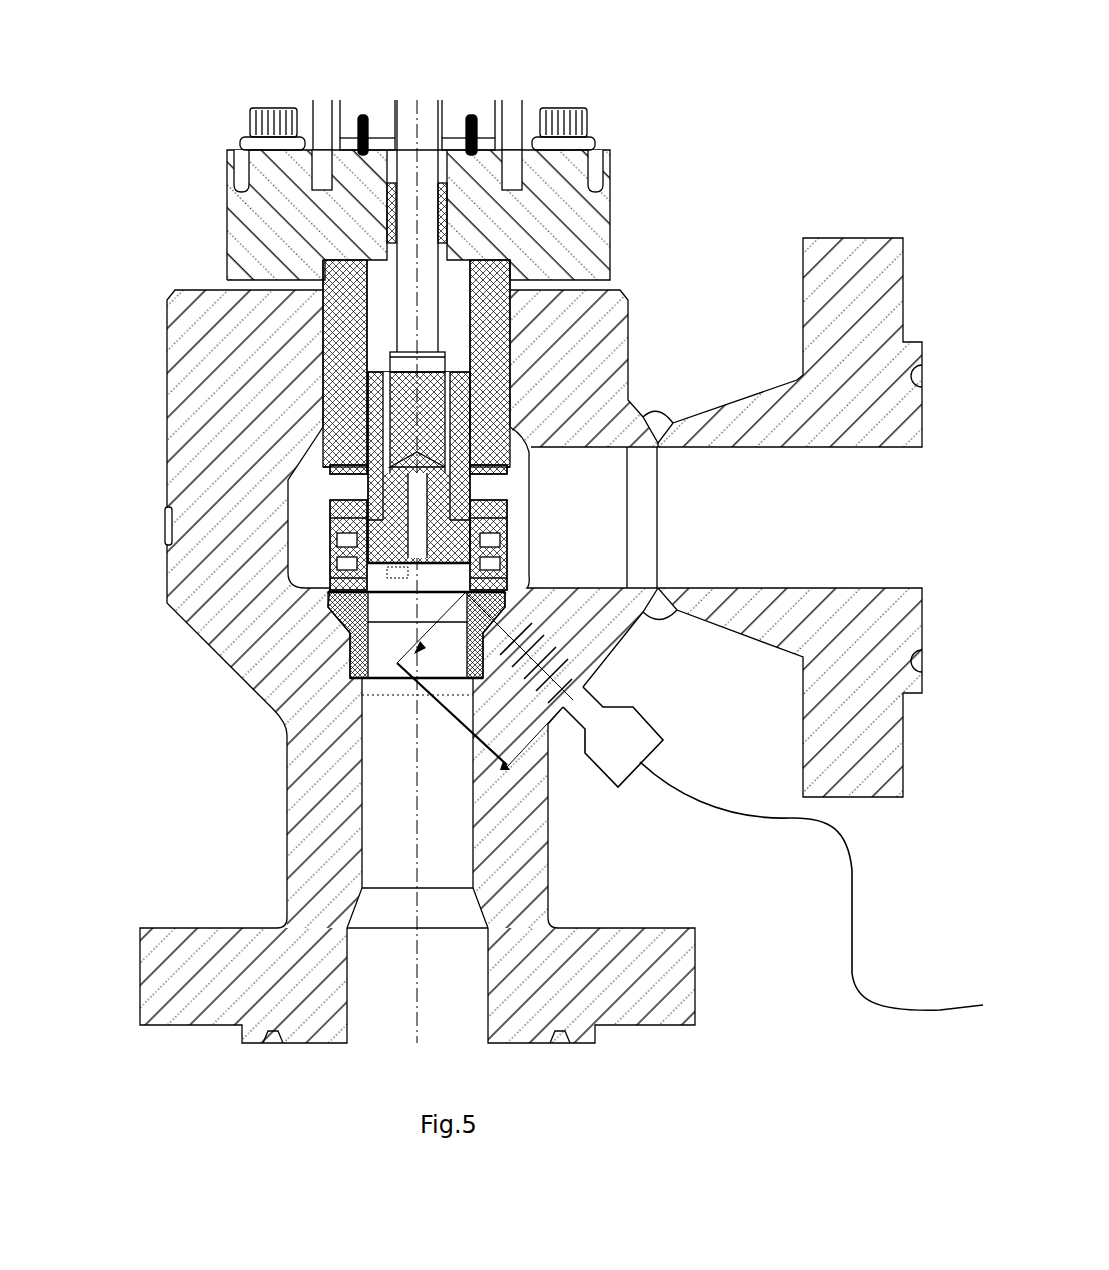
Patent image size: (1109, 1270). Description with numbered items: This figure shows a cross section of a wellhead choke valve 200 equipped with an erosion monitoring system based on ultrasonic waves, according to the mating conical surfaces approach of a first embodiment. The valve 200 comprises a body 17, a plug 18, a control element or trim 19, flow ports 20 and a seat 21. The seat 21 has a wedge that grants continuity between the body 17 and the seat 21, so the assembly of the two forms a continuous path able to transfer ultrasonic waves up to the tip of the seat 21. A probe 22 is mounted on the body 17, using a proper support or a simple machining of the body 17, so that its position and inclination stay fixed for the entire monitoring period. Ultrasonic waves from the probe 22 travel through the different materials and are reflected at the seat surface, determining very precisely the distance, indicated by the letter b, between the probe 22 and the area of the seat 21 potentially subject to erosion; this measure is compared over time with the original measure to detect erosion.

The valve 200 is at (707, 156).
The body 17 is at (207, 633).
The plug 18 is at (330, 568).
The control element or trim 19 is at (335, 508).
The flow ports 20 is at (497, 553).
The seat 21 is at (612, 658).
The probe 22 is at (623, 740).